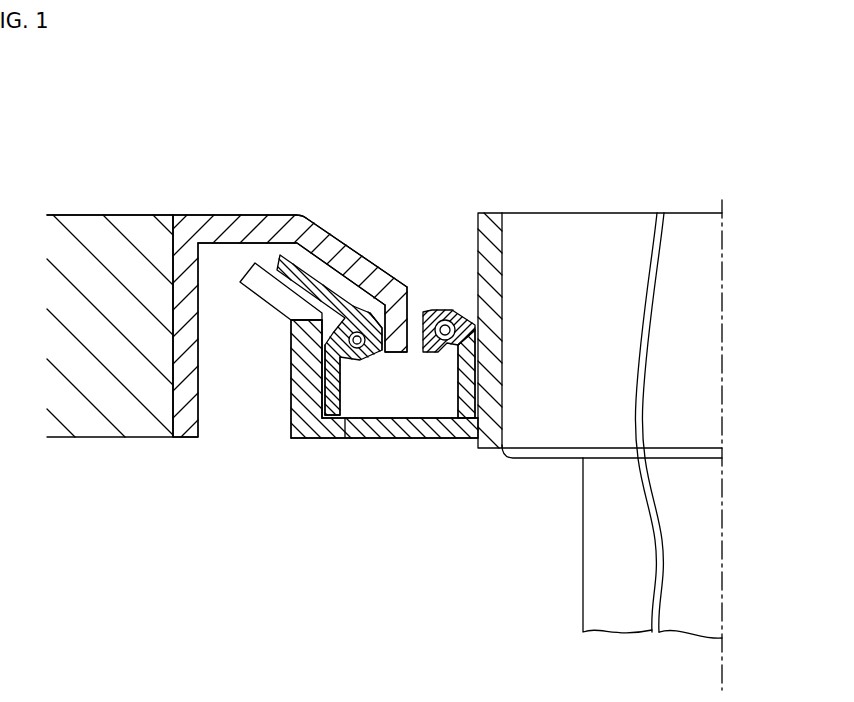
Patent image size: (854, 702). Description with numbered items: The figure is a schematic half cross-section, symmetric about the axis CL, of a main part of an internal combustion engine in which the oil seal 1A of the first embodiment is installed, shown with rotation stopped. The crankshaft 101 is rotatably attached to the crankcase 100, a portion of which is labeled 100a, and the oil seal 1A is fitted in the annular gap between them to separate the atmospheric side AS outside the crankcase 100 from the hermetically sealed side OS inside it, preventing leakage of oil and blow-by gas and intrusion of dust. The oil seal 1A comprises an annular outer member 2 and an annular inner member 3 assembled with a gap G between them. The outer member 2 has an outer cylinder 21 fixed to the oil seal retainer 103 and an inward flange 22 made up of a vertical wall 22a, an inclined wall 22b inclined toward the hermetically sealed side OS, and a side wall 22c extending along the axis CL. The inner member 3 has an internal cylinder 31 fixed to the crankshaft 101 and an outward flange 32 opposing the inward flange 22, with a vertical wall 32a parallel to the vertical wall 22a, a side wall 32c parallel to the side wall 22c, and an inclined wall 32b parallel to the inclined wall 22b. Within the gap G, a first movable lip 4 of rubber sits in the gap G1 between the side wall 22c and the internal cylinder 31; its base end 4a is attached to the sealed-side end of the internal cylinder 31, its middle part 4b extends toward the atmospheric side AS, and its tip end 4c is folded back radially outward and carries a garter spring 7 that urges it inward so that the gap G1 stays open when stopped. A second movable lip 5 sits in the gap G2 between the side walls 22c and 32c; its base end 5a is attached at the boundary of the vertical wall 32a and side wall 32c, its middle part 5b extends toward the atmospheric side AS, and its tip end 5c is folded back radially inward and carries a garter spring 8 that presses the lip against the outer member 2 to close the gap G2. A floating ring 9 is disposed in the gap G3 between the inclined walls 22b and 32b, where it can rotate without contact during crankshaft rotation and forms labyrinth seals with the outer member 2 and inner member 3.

The oil seal 1A is at (330, 140).
The outer member 2 is at (262, 153).
The outer cylinder 21 is at (198, 215).
The inward flange 22 is at (255, 215).
The vertical wall 22a is at (228, 243).
The inclined wall 22b is at (336, 240).
The side wall 22c is at (404, 306).
The inner member 3 is at (428, 512).
The internal cylinder 31 is at (500, 455).
The outward flange 32 is at (427, 440).
The vertical wall 32a is at (333, 437).
The inclined wall 32b is at (292, 322).
The side wall 32c is at (305, 376).
The first movable lip 4 is at (466, 290).
The base end 4a is at (457, 398).
The middle part 4b is at (476, 370).
The tip end 4c is at (476, 300).
The second movable lip 5 is at (365, 300).
The base end 5a is at (332, 417).
The middle part 5b is at (326, 360).
The tip end 5c is at (384, 318).
The garter spring 7 is at (476, 333).
The garter spring 8 is at (348, 437).
The floating ring 9 is at (290, 232).
The crankcase 100 is at (76, 215).
The lower region of body panel 100a is at (177, 573).
The crankshaft 101 is at (603, 213).
The oil seal retainer 103 is at (125, 215).
The gap G is at (398, 405).
The gap G1 is at (476, 300).
The gap G2 is at (322, 372).
The gap G3 is at (355, 282).
The atmospheric side AS is at (432, 93).
The hermetically sealed side OS is at (412, 635).
The axis CL is at (721, 435).